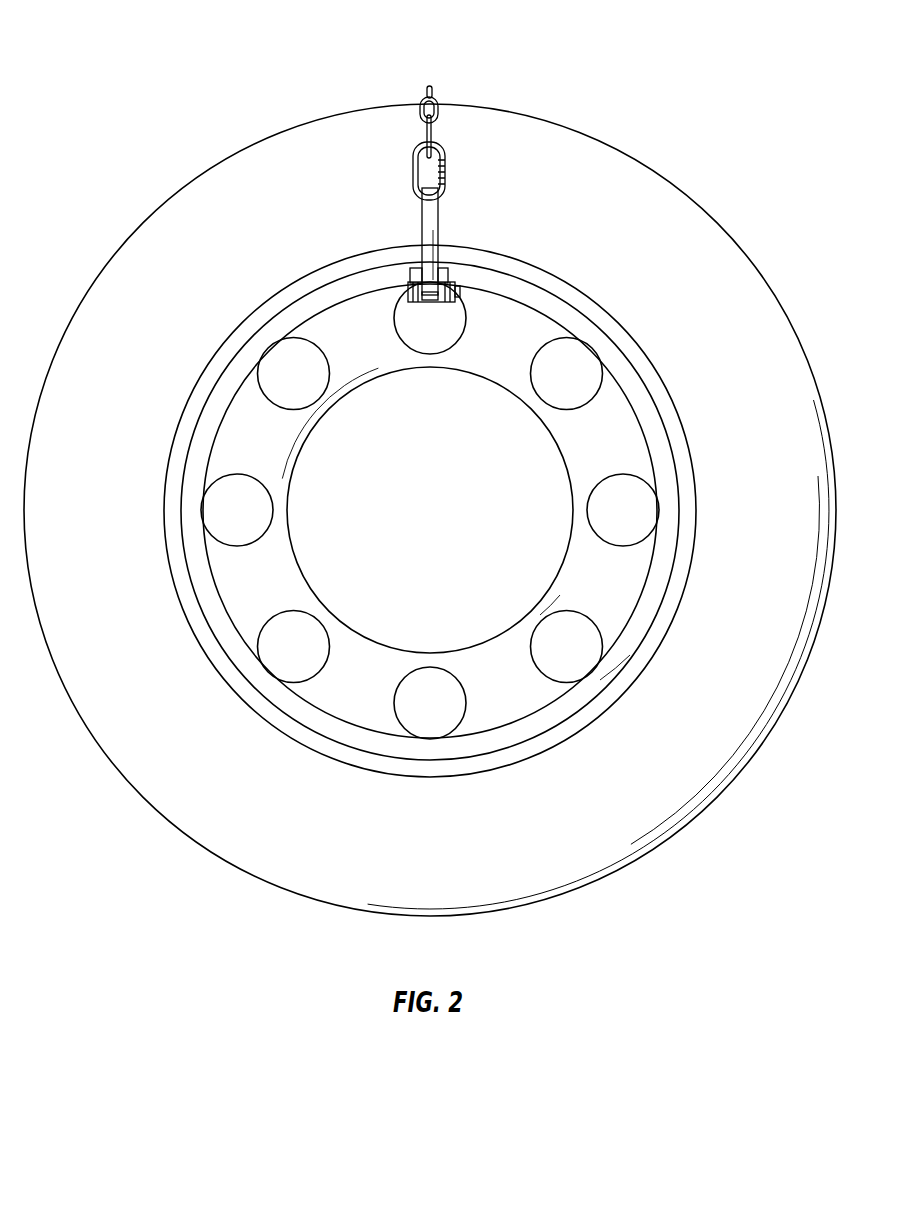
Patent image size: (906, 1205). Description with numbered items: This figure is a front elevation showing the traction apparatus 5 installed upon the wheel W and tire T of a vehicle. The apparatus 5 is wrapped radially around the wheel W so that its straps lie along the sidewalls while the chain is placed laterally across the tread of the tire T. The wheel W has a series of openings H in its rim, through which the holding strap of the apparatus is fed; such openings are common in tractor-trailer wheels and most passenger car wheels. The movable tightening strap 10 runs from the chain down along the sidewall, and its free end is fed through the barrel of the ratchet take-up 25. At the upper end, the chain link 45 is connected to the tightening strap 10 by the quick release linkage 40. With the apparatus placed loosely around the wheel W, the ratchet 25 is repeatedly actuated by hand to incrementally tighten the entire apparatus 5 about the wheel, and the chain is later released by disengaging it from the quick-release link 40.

The apparatus 5 is at (430, 174).
The tightening strap 10 is at (428, 222).
The ratchet take-up 25 is at (412, 282).
The quick release linkage 40 is at (447, 165).
The chain 45 is at (427, 86).
The tire T is at (650, 205).
The wheel W is at (618, 438).
The bolt holes H is at (440, 323).